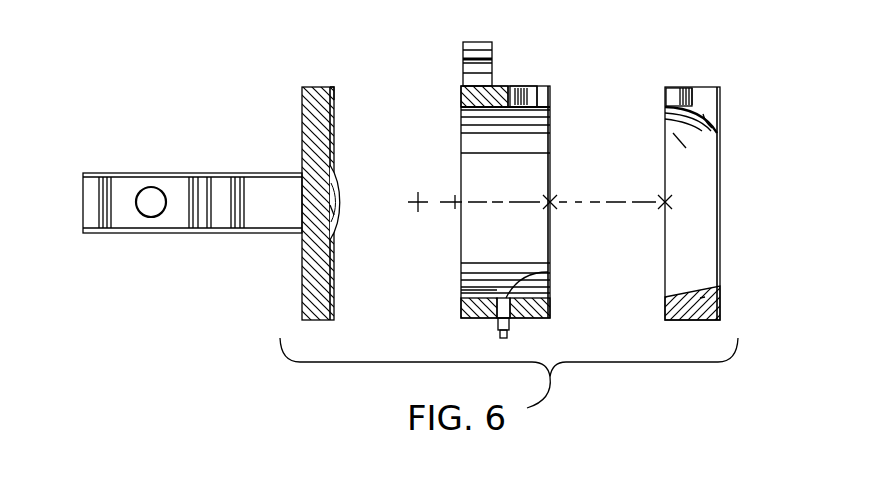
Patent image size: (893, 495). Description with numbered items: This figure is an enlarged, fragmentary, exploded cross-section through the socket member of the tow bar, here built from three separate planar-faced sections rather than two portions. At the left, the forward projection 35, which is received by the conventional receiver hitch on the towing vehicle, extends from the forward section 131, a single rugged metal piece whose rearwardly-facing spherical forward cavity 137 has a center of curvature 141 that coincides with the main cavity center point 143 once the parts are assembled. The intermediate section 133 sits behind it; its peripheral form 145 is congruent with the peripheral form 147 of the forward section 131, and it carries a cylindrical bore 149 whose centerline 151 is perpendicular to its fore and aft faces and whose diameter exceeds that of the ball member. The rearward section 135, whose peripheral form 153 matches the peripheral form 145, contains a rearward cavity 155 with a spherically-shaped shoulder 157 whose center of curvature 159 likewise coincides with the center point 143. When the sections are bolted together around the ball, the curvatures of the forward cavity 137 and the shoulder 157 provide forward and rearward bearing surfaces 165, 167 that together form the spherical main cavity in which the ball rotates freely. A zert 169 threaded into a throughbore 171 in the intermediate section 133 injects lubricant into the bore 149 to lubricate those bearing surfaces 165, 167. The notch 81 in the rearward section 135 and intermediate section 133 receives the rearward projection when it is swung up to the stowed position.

The forward projection 35 is at (124, 185).
The forward section 131 is at (317, 185).
The intermediate section 133 is at (524, 165).
The rearward section 135 is at (710, 183).
The forward cavity 137 is at (373, 143).
The center of curvature 141 is at (417, 196).
The main cavity center point 143 is at (583, 155).
The peripheral form 145 is at (473, 98).
The peripheral form 147 is at (382, 62).
The bore 149 is at (478, 296).
The centerline 151 is at (450, 198).
The peripheral form 153 is at (783, 292).
The rearward cavity 155 is at (686, 148).
The shoulder 157 is at (742, 138).
The center of curvature 159 is at (664, 208).
The forward bearing surface 165 is at (378, 275).
The rearward bearing surface 167 is at (748, 267).
The zert 169 is at (500, 337).
The throughbore 171 is at (608, 283).
The notch 81 is at (667, 87).